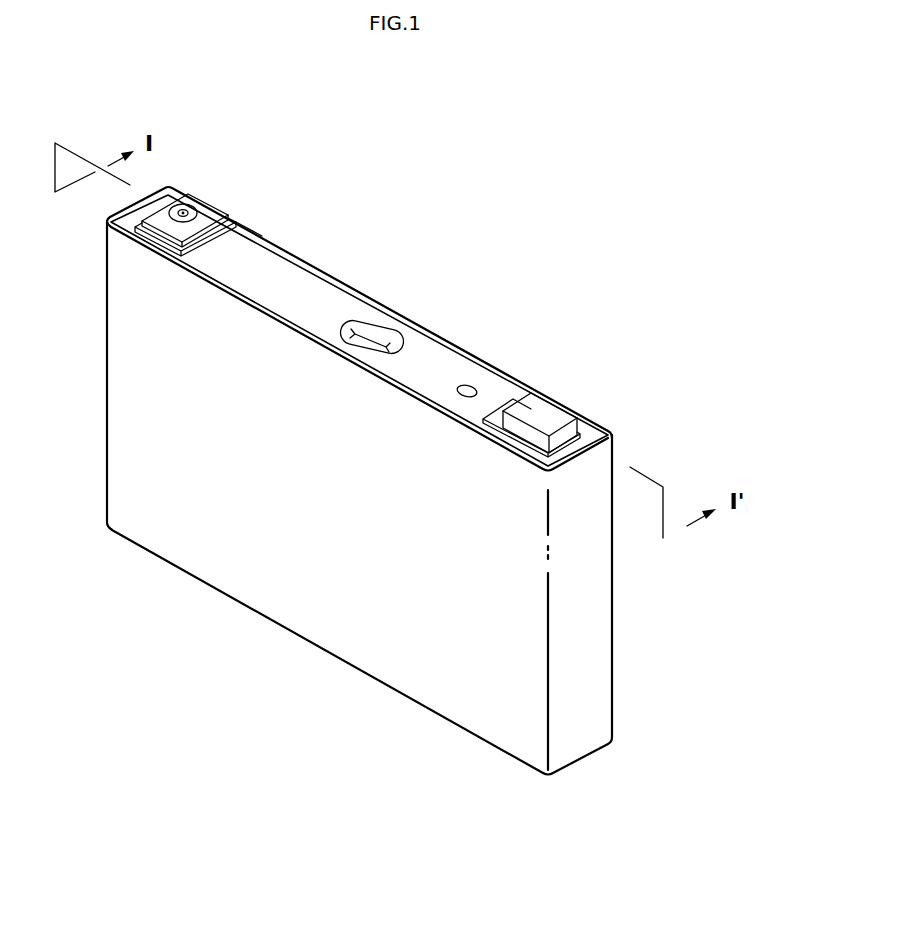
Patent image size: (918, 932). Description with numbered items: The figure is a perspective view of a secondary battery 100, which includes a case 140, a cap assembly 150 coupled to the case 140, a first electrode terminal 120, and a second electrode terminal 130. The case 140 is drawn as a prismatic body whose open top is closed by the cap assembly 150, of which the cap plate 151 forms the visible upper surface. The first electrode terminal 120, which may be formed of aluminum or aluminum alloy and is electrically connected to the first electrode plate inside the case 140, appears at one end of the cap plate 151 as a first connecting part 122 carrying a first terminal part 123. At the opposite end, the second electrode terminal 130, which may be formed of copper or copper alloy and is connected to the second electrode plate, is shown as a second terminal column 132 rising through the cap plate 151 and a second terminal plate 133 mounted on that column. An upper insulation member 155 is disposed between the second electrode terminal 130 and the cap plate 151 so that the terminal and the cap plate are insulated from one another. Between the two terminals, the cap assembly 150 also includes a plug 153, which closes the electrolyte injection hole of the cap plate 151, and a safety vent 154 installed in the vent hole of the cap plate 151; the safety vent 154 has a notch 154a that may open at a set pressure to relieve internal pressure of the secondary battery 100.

The secondary battery 100 is at (676, 138).
The first electrode terminal 120 is at (554, 384).
The first connecting part 122 is at (581, 443).
The first terminal part 123 is at (540, 395).
The second electrode terminal 130 is at (205, 171).
The second terminal column 132 is at (180, 174).
The second terminal plate 133 is at (208, 212).
The case 140 is at (307, 625).
The cap assembly 150 is at (343, 276).
The cap plate 151 is at (287, 266).
The plug 153 is at (464, 382).
The safety vent 154 is at (401, 295).
The notch 154a is at (381, 346).
The upper insulation member 155 is at (260, 236).